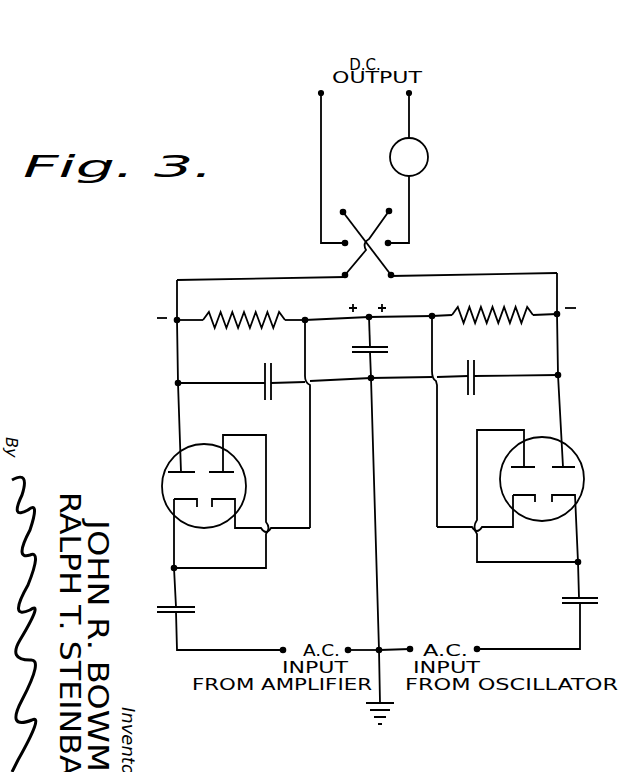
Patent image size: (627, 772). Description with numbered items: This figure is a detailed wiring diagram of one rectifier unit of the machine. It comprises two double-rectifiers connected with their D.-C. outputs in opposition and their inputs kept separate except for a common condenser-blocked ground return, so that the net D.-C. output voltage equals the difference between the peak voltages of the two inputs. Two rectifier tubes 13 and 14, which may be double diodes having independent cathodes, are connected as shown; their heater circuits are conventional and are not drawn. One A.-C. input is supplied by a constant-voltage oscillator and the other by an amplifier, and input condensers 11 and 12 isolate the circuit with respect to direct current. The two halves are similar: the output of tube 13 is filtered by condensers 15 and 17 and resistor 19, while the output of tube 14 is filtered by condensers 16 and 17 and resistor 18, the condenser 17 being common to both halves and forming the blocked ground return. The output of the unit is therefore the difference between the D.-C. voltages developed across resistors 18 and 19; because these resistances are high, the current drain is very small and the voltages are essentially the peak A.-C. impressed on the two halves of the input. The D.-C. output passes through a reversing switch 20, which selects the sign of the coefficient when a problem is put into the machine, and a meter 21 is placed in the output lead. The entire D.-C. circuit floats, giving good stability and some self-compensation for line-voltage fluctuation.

The input condenser 11 is at (197, 612).
The input condenser 12 is at (560, 600).
The rectifier tube 13 is at (178, 456).
The rectifier tube 14 is at (578, 453).
The condenser 15 is at (262, 364).
The condenser 16 is at (474, 358).
The condenser 17 is at (352, 350).
The resistor 18 is at (514, 307).
The resistor 19 is at (247, 309).
The reversing switch 20 is at (387, 252).
The meter 21 is at (428, 151).